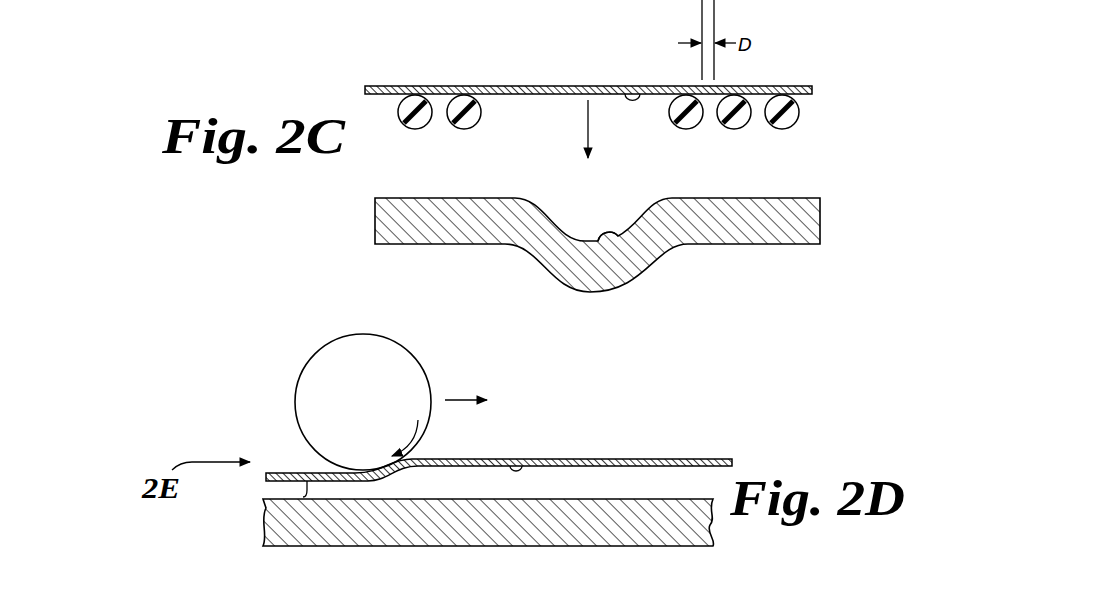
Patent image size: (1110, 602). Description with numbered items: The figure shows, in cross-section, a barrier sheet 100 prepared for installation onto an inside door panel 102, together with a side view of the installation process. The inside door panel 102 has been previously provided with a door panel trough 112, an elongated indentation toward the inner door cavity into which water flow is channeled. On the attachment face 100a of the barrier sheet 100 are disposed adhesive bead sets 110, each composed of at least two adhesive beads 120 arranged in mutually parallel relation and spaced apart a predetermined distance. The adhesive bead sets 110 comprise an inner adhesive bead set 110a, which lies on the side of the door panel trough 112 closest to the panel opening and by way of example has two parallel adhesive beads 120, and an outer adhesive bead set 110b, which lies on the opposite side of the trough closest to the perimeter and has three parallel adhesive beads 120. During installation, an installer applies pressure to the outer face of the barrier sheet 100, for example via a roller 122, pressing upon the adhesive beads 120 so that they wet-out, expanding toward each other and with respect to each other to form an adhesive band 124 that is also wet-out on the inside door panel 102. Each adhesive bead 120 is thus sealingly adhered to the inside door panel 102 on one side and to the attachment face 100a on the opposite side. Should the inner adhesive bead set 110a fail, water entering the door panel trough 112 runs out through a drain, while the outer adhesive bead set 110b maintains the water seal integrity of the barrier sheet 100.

In FIG. 2C, the barrier sheet 100 is at (386, 86).
In FIG. 2D, the barrier sheet 100 is at (578, 459).
In FIG. 2C, the attachment face 100a is at (633, 93).
In FIG. 2D, the attachment face 100a is at (517, 465).
In FIG. 2C, the inside door panel 102 is at (735, 245).
In FIG. 2D, the inside door panel 102 is at (322, 547).
In FIG. 2C, the adhesive bead sets 110 is at (710, 62).
In FIG. 2C, the inner adhesive bead set 110a is at (500, 111).
In FIG. 2C, the outer adhesive bead set 110b is at (812, 104).
In FIG. 2C, the door panel trough 112 is at (628, 262).
In FIG. 2C, the adhesive beads 120 is at (456, 126).
In FIG. 2D, the adhesive beads 120 is at (633, 483).
In FIG. 2D, the roller 122 is at (410, 356).
In FIG. 2D, the adhesive band 124 is at (300, 470).